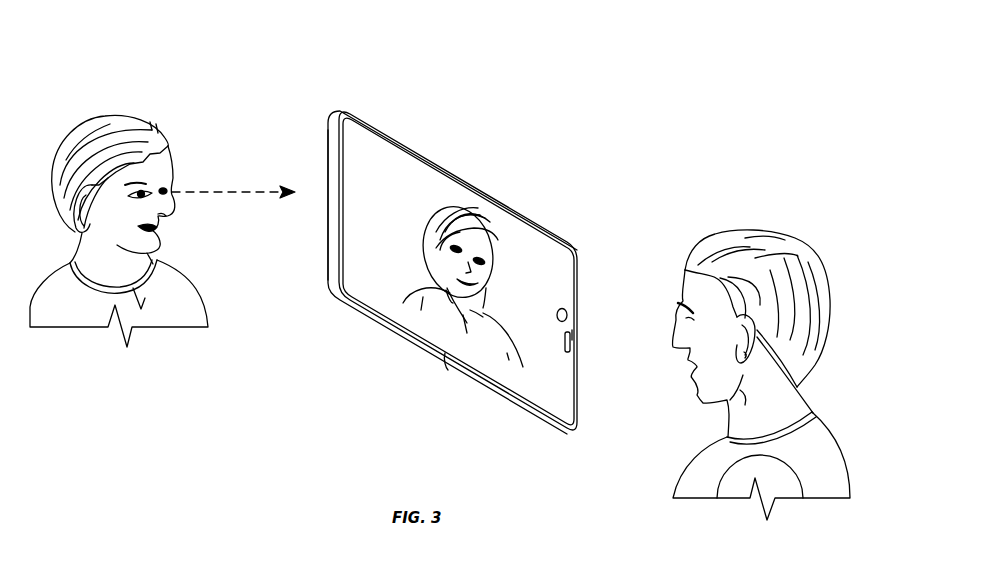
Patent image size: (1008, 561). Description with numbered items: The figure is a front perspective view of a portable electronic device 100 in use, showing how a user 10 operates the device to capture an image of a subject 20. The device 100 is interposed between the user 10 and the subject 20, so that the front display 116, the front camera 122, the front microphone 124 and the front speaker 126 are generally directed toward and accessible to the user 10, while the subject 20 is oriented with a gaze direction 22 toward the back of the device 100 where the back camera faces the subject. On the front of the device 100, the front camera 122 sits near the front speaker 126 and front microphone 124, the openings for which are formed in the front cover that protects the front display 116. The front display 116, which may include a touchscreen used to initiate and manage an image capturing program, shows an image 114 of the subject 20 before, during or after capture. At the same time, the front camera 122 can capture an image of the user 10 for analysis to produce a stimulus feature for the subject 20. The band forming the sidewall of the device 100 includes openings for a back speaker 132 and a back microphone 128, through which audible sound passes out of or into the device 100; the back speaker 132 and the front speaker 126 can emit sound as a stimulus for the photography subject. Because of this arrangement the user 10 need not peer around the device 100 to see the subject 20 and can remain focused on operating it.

The user 10 is at (706, 152).
The subject 20 is at (50, 95).
The gaze direction 22 is at (206, 190).
The portable electronic device 100 is at (557, 197).
The image 114 is at (450, 203).
The front display 116 is at (517, 230).
The front camera 122 is at (570, 316).
The front microphone 124 is at (572, 345).
The front speaker 126 is at (575, 335).
The back microphone 128 is at (335, 231).
The back speaker 132 is at (335, 151).